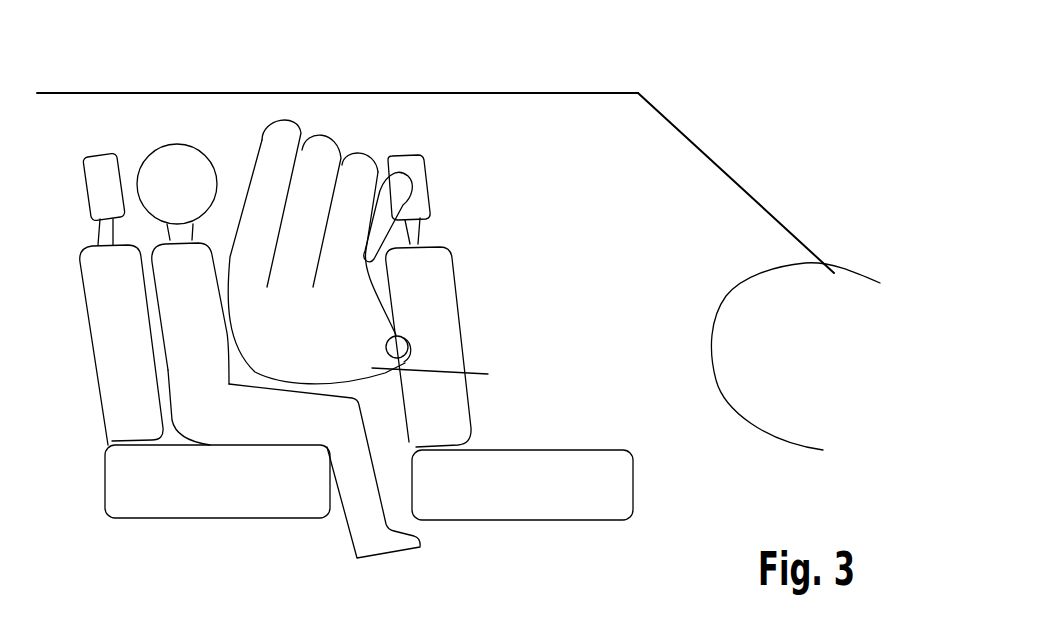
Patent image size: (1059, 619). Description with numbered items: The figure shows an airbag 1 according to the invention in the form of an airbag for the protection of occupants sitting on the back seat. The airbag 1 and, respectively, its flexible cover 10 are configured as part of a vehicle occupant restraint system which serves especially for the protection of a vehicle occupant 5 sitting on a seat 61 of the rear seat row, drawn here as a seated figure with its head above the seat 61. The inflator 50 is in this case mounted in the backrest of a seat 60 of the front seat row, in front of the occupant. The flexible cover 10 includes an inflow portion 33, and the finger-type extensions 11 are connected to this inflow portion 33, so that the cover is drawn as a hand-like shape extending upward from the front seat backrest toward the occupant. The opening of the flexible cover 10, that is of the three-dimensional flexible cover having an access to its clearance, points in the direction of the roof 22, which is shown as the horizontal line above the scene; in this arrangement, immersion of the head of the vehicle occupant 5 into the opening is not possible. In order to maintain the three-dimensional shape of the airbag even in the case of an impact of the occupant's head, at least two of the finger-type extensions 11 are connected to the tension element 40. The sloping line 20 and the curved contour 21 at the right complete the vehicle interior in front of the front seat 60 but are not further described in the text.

The airbag 1 is at (263, 118).
The vehicle occupant 5 is at (175, 155).
The flexible cover 10 is at (353, 308).
The finger-type extensions 11 is at (284, 128).
The windshield 20 is at (774, 203).
The dashboard 21 is at (783, 293).
The roof 22 is at (503, 92).
The inflow portion 33 is at (444, 375).
The tension element 40 is at (400, 164).
The inflator 50 is at (404, 346).
The seat of the front seat row 60 is at (521, 522).
The seat of the rear seat row 61 is at (216, 520).